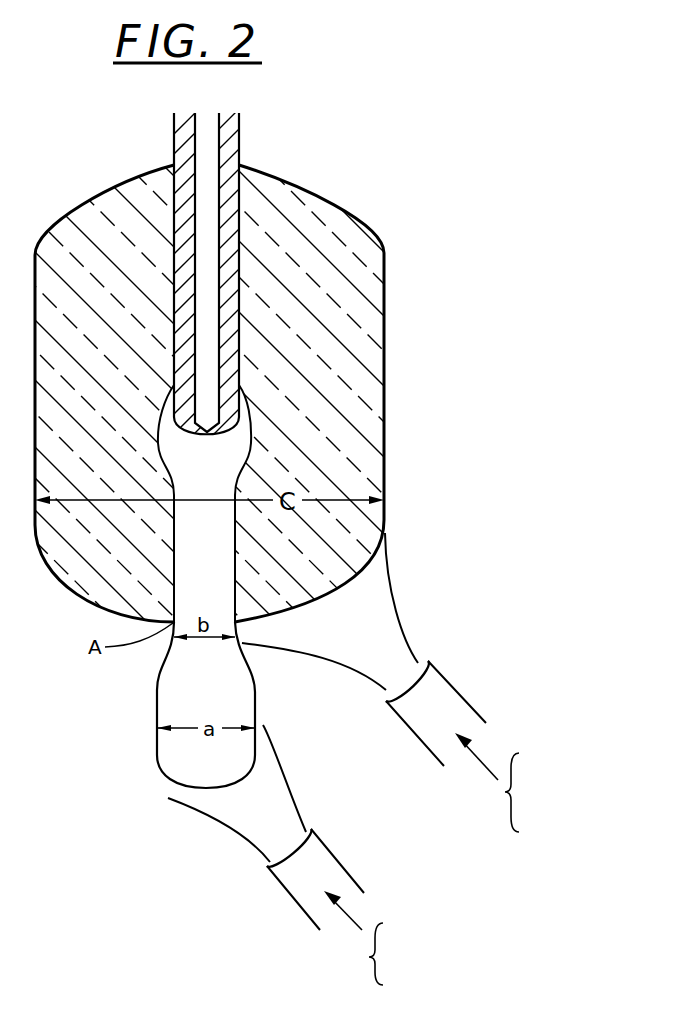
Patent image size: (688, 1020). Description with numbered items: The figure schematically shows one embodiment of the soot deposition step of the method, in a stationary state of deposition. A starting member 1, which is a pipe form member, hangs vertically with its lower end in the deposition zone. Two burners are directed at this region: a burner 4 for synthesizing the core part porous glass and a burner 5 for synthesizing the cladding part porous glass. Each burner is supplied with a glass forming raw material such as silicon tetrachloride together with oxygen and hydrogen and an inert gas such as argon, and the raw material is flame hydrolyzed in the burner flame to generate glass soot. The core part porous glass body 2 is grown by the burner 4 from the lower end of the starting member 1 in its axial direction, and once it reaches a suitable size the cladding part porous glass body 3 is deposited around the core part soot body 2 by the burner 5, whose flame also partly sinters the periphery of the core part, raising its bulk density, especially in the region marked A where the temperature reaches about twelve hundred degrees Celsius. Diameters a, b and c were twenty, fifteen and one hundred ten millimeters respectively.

The starting member 1 is at (232, 137).
The core part porous glass body 2 is at (253, 441).
The cladding part porous glass body 3 is at (353, 452).
The burner for synthesizing the core part porous glass 4 is at (318, 862).
The burner for synthesizing the cladding part porous glass 5 is at (433, 677).